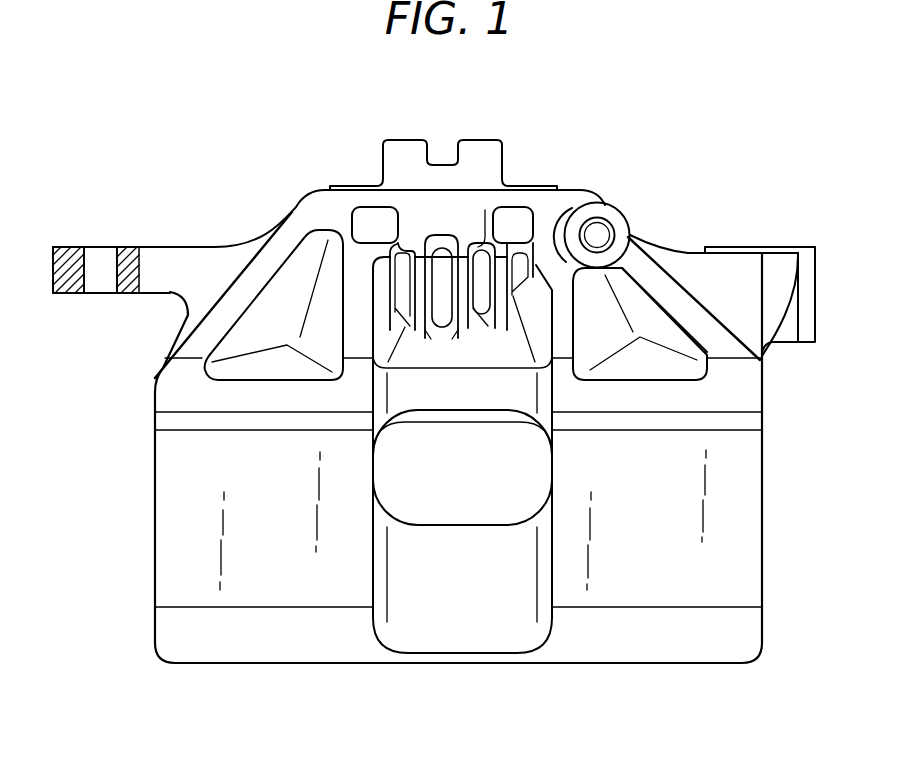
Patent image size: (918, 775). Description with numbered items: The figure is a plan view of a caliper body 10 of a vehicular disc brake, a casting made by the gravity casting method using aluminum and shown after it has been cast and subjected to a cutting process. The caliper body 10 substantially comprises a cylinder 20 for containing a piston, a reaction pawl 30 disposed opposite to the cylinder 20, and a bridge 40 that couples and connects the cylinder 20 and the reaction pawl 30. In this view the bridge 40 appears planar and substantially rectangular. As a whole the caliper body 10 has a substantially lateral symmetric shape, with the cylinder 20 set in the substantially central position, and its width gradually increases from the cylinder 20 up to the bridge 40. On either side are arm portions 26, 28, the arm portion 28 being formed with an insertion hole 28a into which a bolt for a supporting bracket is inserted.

The caliper body 10 is at (534, 164).
The cylinder 20 is at (441, 257).
The arm portion 26 is at (757, 270).
The arm portion 28 is at (72, 248).
The insertion hole 28a is at (85, 290).
The reaction pawl 30 is at (291, 648).
The bridge 40 is at (190, 538).